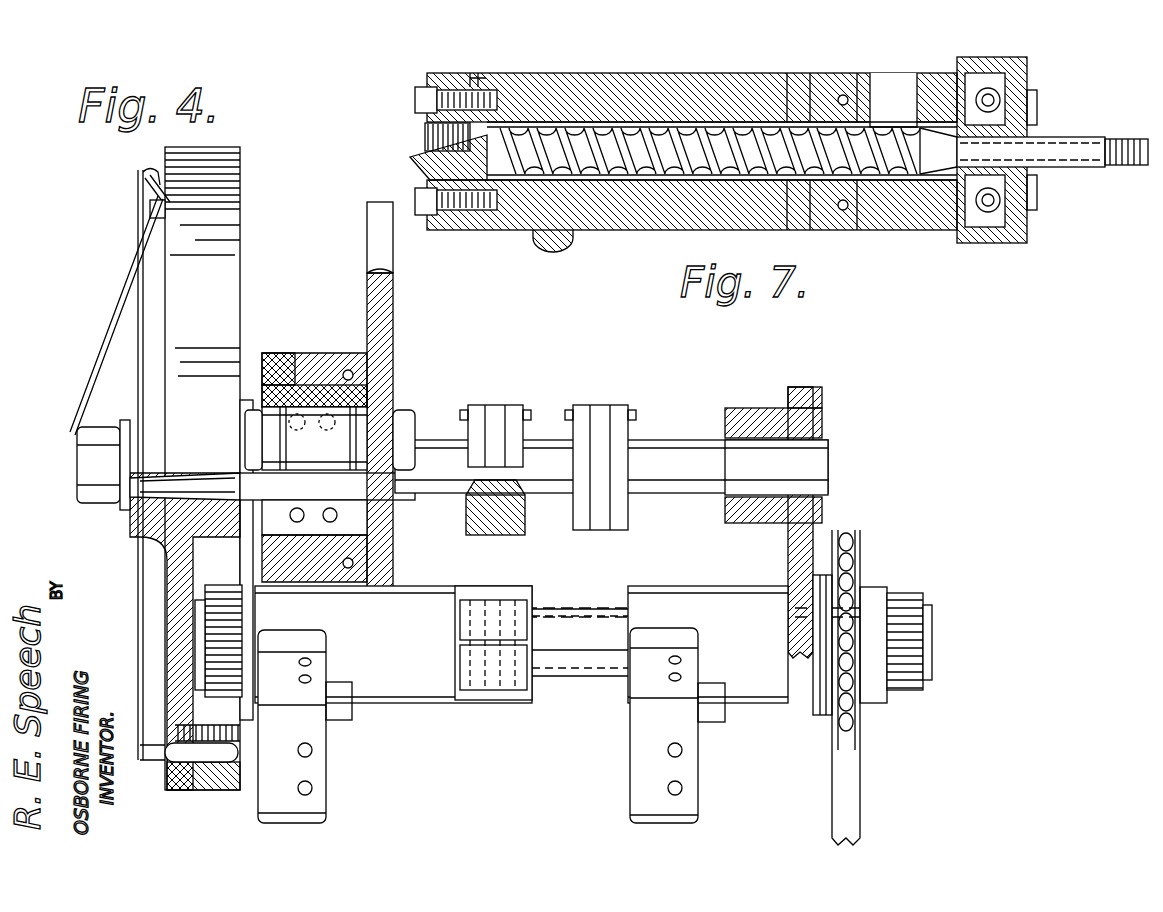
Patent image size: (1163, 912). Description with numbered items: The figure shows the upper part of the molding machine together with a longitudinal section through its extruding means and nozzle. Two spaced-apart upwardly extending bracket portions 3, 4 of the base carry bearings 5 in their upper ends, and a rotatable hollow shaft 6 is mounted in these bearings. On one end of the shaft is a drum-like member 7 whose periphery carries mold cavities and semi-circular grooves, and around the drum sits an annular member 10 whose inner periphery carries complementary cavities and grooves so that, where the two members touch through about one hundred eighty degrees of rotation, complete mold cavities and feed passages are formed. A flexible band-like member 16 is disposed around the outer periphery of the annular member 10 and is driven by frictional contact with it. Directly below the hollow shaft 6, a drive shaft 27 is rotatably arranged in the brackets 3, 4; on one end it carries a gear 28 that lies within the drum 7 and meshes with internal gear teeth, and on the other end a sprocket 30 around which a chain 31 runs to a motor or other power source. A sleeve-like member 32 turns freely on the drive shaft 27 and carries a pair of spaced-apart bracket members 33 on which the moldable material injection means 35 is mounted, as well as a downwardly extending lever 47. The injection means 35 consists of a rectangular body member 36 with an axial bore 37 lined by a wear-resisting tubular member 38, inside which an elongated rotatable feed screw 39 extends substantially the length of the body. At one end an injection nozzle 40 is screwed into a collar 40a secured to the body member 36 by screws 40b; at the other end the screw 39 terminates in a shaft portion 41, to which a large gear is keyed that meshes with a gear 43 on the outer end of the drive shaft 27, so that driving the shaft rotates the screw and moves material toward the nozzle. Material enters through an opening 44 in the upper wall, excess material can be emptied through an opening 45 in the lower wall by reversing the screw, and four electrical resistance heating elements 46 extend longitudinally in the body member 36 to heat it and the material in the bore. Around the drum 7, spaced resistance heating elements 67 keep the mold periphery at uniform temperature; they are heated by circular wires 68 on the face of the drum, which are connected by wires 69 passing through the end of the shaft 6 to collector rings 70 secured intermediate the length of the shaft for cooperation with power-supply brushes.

In FIG. 4, the bracket portion 3 is at (372, 288).
In FIG. 4, the bracket portion 4 is at (796, 545).
In FIG. 4, the bearings 5 is at (826, 496).
In FIG. 4, the rotatable hollow shaft 6 is at (682, 458).
In FIG. 4, the drum-like member 7 is at (178, 582).
In FIG. 4, the annular member 10 is at (167, 770).
In FIG. 4, the flexible band-like member 16 is at (200, 790).
In FIG. 4, the drive shaft 27 is at (925, 660).
In FIG. 4, the gear 28 is at (240, 684).
In FIG. 4, the sprocket 30 is at (855, 725).
In FIG. 4, the chain 31 is at (862, 800).
In FIG. 4, the sleeve-like member 32 is at (585, 674).
In FIG. 4, the bracket members 33 is at (317, 806).
In FIG. 4, the gear 43 is at (905, 595).
In FIG. 4, the lever 47 is at (490, 700).
In FIG. 4, the resistance heating elements 67 is at (238, 752).
In FIG. 4, the circular wires 68 is at (145, 178).
In FIG. 4, the wires 69 is at (112, 326).
In FIG. 4, the collector rings 70 is at (512, 418).
In FIG. 7, the moldable material injection means 35 is at (925, 245).
In FIG. 7, the body member 36 is at (878, 215).
In FIG. 7, the axial bore 37 is at (665, 130).
In FIG. 7, the tubular member 38 is at (738, 125).
In FIG. 7, the feed screw 39 is at (638, 160).
In FIG. 7, the injection nozzle 40 is at (420, 150).
In FIG. 7, the collar 40a is at (438, 230).
In FIG. 7, the screws 40b is at (420, 88).
In FIG. 7, the shaft portion 41 is at (1072, 136).
In FIG. 7, the opening 44 is at (893, 100).
In FIG. 7, the opening 45 is at (945, 240).
In FIG. 7, the electrical resistance heating elements 46 is at (593, 82).